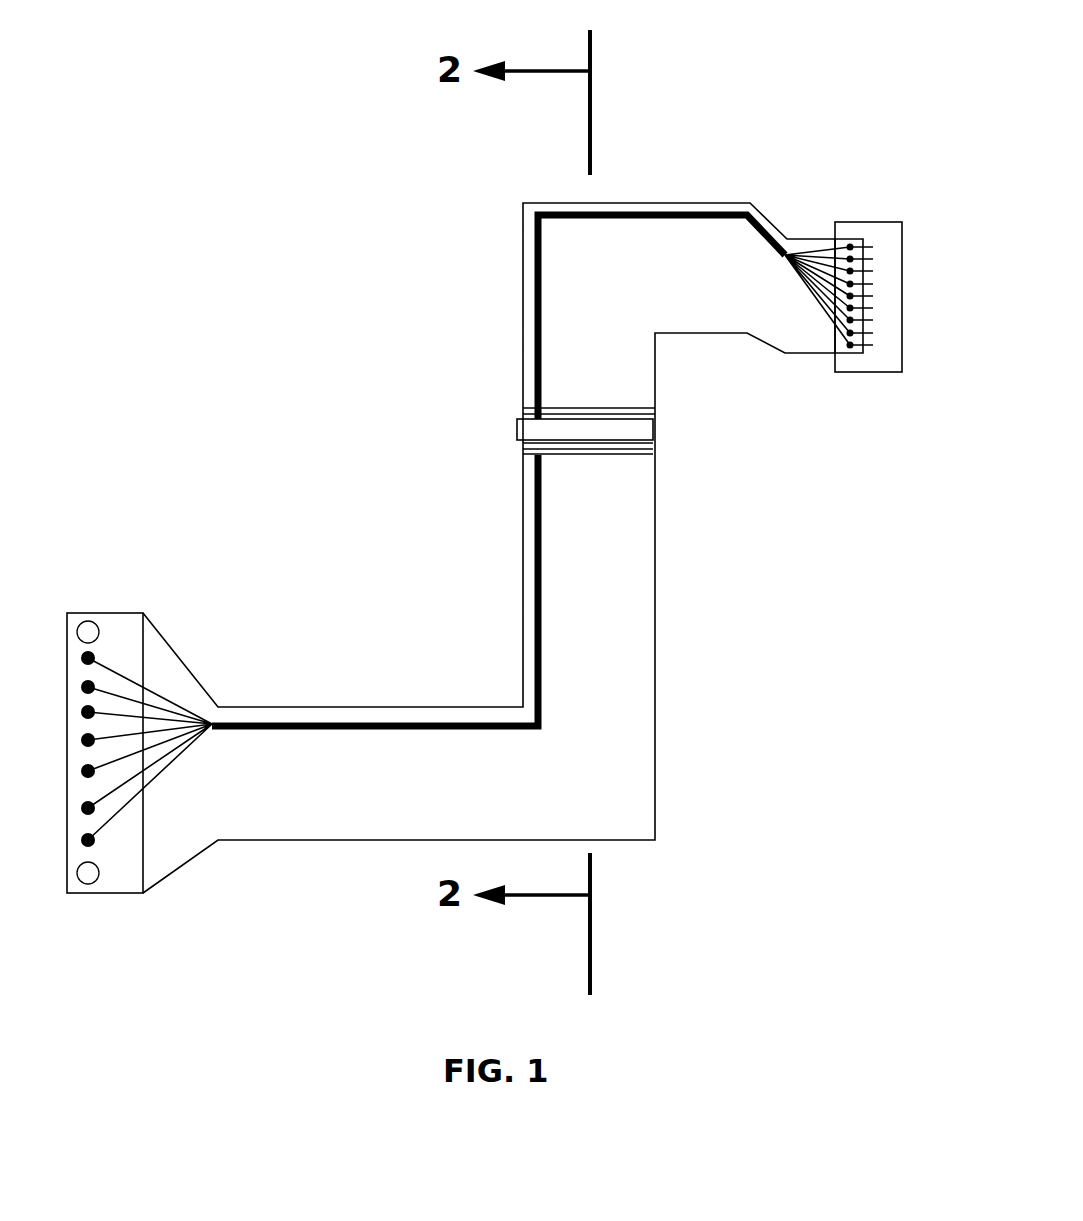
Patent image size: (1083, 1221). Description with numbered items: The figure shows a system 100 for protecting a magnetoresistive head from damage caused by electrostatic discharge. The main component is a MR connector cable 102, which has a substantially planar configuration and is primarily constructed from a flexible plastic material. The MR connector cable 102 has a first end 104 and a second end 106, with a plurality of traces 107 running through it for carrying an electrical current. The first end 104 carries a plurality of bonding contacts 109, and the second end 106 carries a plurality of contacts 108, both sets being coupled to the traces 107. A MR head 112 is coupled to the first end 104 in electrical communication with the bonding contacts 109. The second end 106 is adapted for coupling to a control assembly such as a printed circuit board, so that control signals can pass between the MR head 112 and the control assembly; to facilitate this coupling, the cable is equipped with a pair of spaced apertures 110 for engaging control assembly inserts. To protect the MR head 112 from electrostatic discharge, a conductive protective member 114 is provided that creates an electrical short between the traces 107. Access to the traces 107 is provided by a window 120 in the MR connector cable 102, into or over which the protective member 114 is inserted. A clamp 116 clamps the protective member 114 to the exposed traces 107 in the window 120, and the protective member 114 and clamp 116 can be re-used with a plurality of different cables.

The system 100 is at (362, 466).
The MR connector cable 102 is at (620, 840).
The first end 104 is at (805, 239).
The second end 106 is at (118, 895).
The traces 107 is at (655, 213).
The contacts 108 is at (95, 843).
The bonding contacts 109 is at (850, 347).
The spaced apertures 110 is at (101, 630).
The MR head 112 is at (903, 222).
The protective member 114 is at (648, 418).
The clamp 116 is at (517, 430).
The window 120 is at (625, 408).